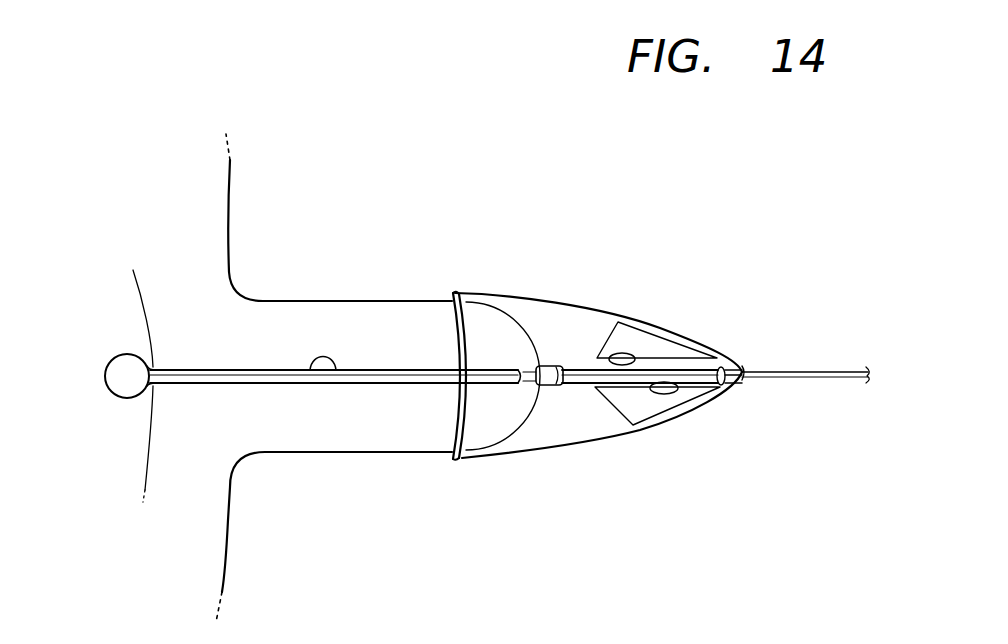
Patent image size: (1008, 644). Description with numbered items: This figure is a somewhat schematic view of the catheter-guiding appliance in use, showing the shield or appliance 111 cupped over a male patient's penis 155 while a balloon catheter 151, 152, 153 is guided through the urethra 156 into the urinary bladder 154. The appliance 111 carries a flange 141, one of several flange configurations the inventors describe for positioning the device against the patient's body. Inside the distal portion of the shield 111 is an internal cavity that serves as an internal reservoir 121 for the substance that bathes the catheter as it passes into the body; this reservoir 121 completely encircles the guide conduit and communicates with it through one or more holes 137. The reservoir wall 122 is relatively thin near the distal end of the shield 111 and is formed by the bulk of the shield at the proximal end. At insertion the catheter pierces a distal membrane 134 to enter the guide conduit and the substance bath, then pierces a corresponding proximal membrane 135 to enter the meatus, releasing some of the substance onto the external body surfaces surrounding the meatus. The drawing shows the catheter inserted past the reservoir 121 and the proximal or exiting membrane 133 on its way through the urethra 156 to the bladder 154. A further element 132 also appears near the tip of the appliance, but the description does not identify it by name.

The shield 111 is at (542, 278).
The internal reservoir 121 is at (666, 340).
The reservoir wall 122 is at (697, 328).
The tip 132 is at (742, 370).
The proximal or exiting membrane 133 is at (562, 366).
The distal membrane 134 is at (724, 366).
The proximal membrane 135 is at (538, 387).
The holes 137 is at (621, 353).
The flange 141 is at (473, 297).
The balloon catheter 151 is at (850, 380).
The balloon catheter 152 is at (410, 382).
The balloon catheter 153 is at (122, 400).
The urinary bladder 154 is at (101, 386).
The penis 155 is at (340, 300).
The urethra 156 is at (310, 384).